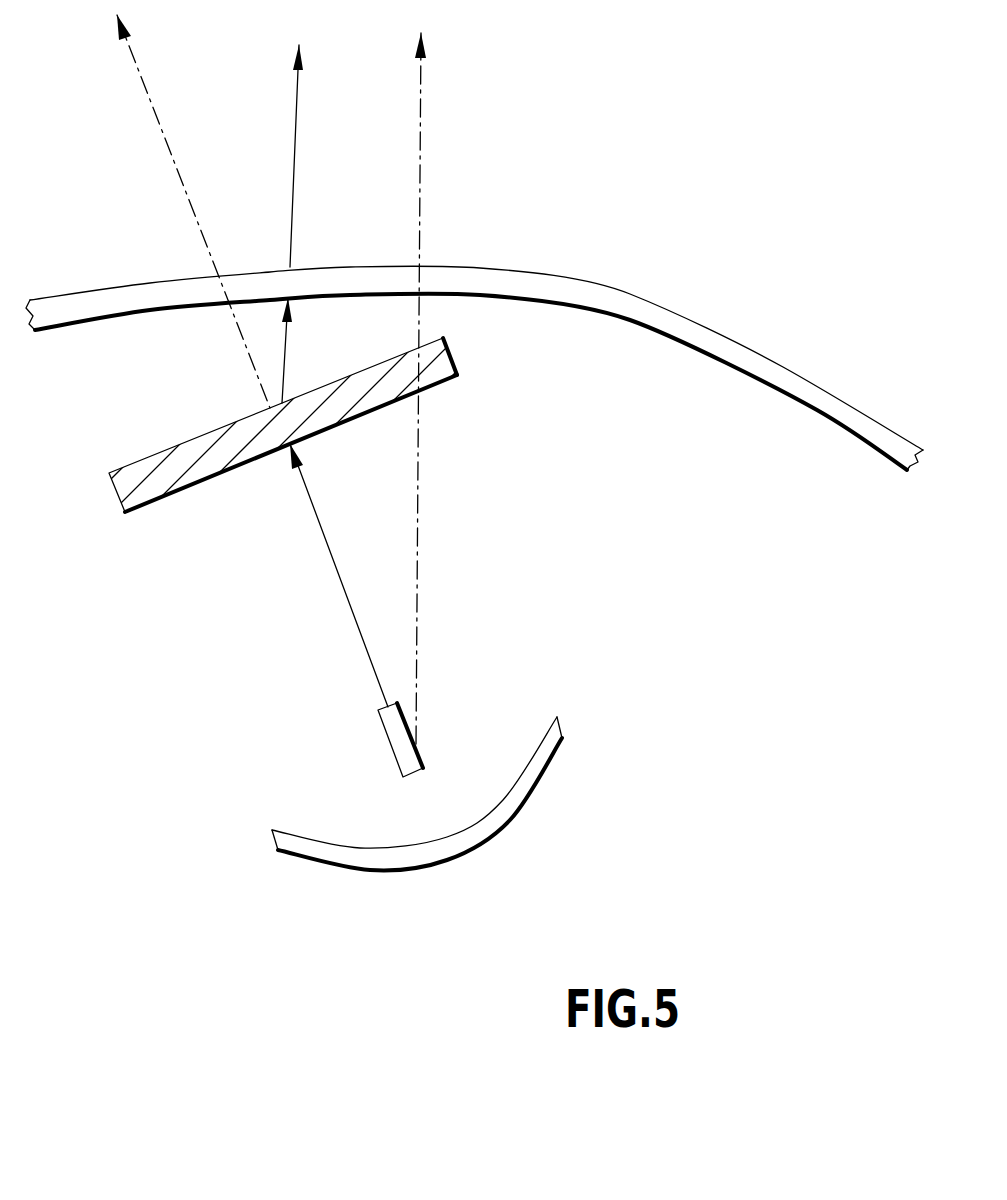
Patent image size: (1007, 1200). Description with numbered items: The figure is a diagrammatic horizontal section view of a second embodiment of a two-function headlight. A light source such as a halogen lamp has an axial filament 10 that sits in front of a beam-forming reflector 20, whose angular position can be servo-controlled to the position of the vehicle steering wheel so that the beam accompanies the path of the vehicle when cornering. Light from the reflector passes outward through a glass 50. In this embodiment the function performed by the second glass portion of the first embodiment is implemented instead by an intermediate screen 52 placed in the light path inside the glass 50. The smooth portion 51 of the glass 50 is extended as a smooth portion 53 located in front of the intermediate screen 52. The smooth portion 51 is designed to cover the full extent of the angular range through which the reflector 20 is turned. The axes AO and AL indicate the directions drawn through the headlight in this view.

The axial filament 10 is at (385, 717).
The beam-forming reflector 20 is at (543, 732).
The glass 50 is at (474, 338).
The smooth portion 51 is at (815, 398).
The intermediate screen 52 is at (148, 498).
The smooth portion 53 is at (138, 290).
The optical axis AO is at (138, 70).
The axis AL is at (422, 102).